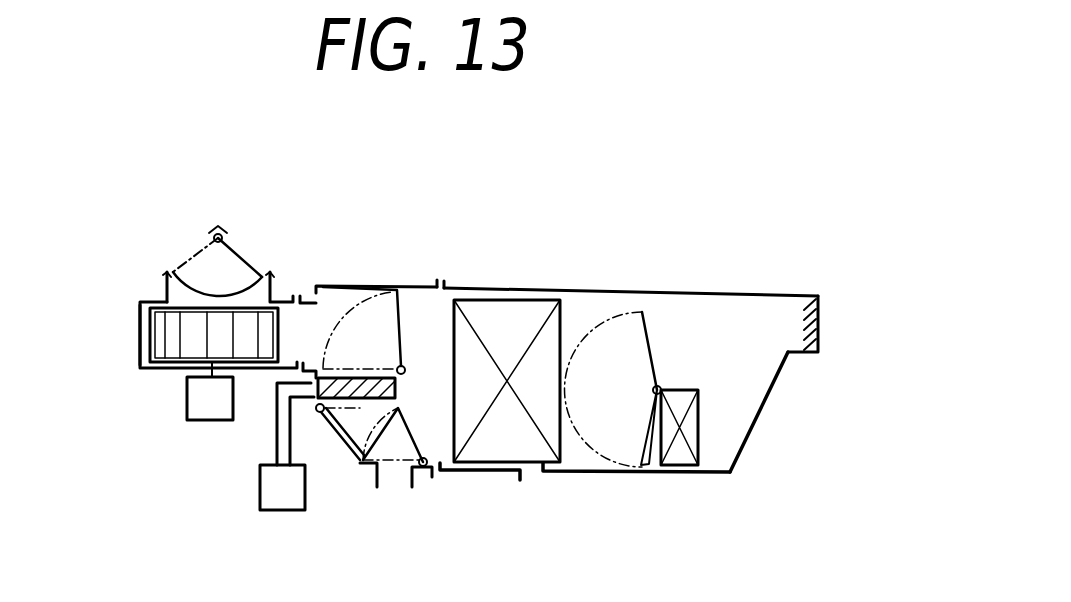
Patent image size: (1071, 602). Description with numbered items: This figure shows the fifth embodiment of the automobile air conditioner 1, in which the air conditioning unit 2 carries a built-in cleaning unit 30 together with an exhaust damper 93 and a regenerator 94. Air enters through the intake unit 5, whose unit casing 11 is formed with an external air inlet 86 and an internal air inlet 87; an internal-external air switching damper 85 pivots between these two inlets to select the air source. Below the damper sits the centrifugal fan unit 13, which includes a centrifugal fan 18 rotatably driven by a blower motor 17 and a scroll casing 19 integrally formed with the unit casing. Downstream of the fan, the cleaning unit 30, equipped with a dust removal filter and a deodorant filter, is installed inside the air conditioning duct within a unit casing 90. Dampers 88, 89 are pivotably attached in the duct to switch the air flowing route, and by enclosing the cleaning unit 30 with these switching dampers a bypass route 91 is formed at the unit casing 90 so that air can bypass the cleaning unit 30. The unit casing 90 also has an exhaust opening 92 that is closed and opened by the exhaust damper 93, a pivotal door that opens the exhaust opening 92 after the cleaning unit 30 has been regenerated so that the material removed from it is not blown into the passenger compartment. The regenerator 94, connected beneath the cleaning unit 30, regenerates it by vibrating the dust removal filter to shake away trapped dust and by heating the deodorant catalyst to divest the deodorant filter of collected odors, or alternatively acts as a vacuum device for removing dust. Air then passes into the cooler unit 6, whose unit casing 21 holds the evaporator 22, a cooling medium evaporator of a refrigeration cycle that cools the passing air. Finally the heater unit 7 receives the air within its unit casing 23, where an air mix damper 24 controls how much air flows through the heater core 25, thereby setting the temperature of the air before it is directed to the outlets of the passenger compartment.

The air conditioner 1 is at (724, 160).
The air conditioning unit 2 is at (709, 223).
The intake unit 5 is at (148, 291).
The cooler unit 6 is at (554, 272).
The heater unit 7 is at (762, 430).
The unit casing 11 is at (218, 226).
The centrifugal fan unit 13 is at (130, 392).
The blower motor 17 is at (198, 407).
The centrifugal fan 18 is at (152, 330).
The scroll casing 19 is at (140, 351).
The unit casing 21 is at (473, 287).
The evaporator 22 is at (507, 317).
The unit casing 23 is at (717, 477).
The air mix damper 24 is at (640, 453).
The heater core 25 is at (678, 466).
The cleaning unit 30 is at (322, 366).
The internal-external air switching damper 85 is at (240, 248).
The external air inlet 86 is at (188, 258).
The internal air inlet 87 is at (262, 270).
The damper 88 is at (408, 330).
The damper 89 is at (342, 442).
The unit casing 90 is at (375, 288).
The bypass route 91 is at (445, 285).
The exhaust opening 92 is at (395, 477).
The exhaust damper 93 is at (428, 447).
The regenerator 94 is at (282, 495).